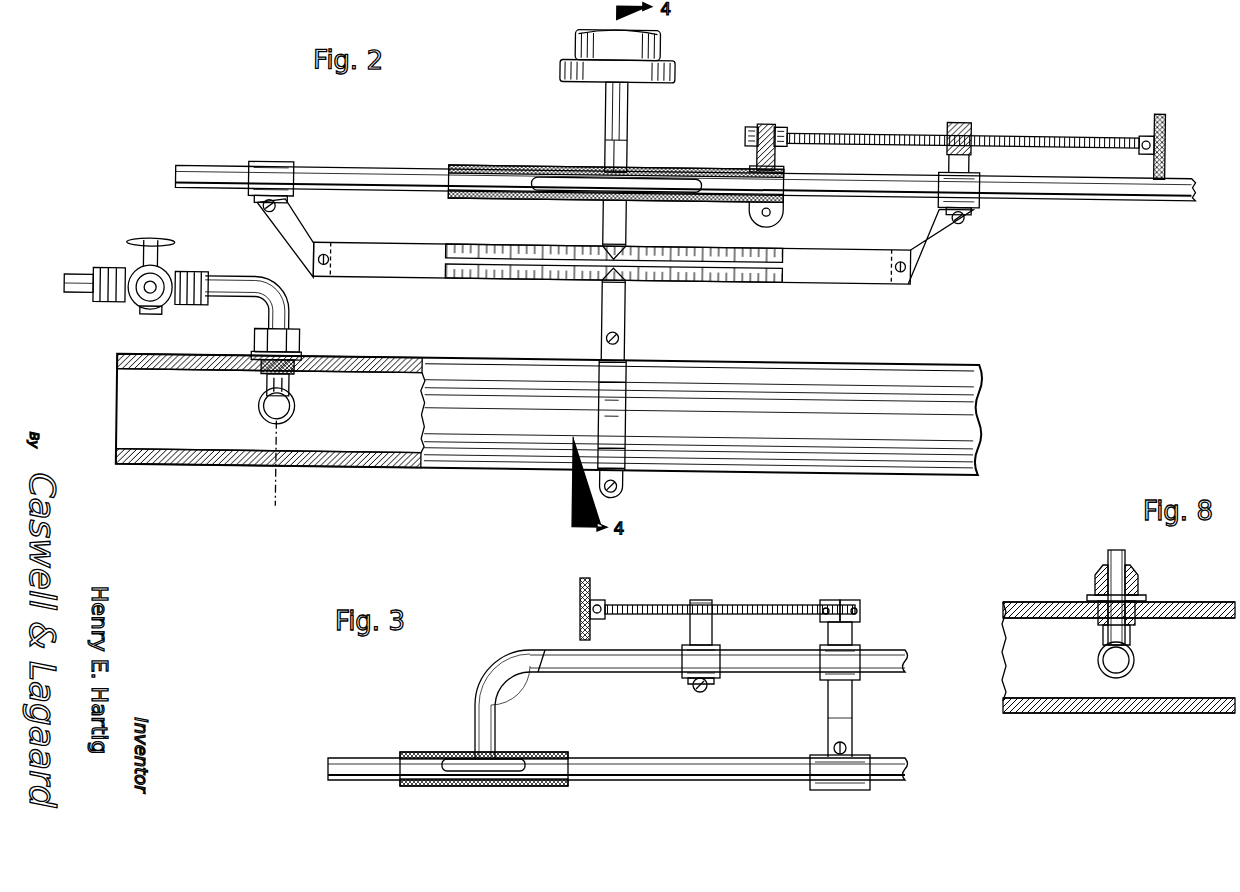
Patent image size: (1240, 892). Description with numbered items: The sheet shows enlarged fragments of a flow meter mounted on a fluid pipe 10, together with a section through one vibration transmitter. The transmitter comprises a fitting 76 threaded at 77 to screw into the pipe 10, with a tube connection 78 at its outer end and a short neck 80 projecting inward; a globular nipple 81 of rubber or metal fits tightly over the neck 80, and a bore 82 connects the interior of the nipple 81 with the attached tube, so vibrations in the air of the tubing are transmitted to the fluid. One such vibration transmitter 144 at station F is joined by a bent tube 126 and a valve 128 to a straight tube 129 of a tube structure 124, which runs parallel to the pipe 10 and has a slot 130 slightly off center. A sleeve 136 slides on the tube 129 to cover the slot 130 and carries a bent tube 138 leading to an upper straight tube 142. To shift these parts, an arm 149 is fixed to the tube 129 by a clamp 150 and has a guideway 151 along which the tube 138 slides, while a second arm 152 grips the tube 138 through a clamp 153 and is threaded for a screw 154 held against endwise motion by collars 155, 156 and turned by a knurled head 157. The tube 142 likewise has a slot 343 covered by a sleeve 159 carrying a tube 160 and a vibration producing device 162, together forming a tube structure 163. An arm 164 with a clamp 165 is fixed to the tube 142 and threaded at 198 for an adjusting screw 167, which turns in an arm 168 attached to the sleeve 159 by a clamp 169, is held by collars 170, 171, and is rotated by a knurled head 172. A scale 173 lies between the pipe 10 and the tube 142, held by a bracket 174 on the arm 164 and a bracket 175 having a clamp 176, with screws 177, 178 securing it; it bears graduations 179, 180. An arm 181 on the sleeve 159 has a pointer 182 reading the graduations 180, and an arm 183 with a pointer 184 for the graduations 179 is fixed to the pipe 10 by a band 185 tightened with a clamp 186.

In FIG. 2, the pipe 10 is at (935, 372).
In FIG. 8, the pipe 10 is at (1083, 713).
In FIG. 2, the fitting 76 is at (302, 360).
In FIG. 8, the fitting 76 is at (1131, 628).
In FIG. 8, the threaded portion 77 is at (1096, 614).
In FIG. 2, the tube connection 78 is at (258, 340).
In FIG. 8, the tube connection 78 is at (1133, 582).
In FIG. 8, the neck 80 is at (1106, 634).
In FIG. 8, the nipple 81 is at (1130, 672).
In FIG. 8, the bore 82 is at (1128, 606).
In FIG. 3, the tube structure 124 is at (388, 758).
In FIG. 2, the bent tube 126 is at (250, 281).
In FIG. 2, the valve 128 is at (136, 306).
In FIG. 2, the straight tube 129 is at (78, 283).
In FIG. 3, the straight tube 129 is at (710, 770).
In FIG. 3, the slot 130 is at (500, 771).
In FIG. 3, the sleeve 136 is at (428, 752).
In FIG. 3, the bent tube 138 is at (555, 672).
In FIG. 2, the straight tube 142 is at (326, 171).
In FIG. 3, the straight tube 142 is at (890, 660).
In FIG. 2, the vibration transmitter 144 is at (268, 420).
In FIG. 3, the arm 149 is at (845, 706).
In FIG. 3, the clamp 150 is at (840, 790).
In FIG. 3, the guideway 151 is at (835, 666).
In FIG. 3, the second arm 152 is at (698, 632).
In FIG. 3, the clamp 153 is at (710, 690).
In FIG. 3, the screw 154 is at (735, 605).
In FIG. 3, the collar 155 is at (826, 600).
In FIG. 3, the collar 156 is at (858, 600).
In FIG. 3, the knurled head 157 is at (580, 600).
In FIG. 2, the sleeve 159 is at (455, 167).
In FIG. 2, the tube 160 is at (603, 110).
In FIG. 2, the vibration producing device 162 is at (660, 55).
In FIG. 2, the tube structure 163 is at (601, 168).
In FIG. 2, the arm 164 is at (962, 164).
In FIG. 2, the clamp 165 is at (965, 214).
In FIG. 2, the adjusting screw 167 is at (1090, 131).
In FIG. 2, the arm 168 is at (775, 152).
In FIG. 2, the clamp 169 is at (783, 210).
In FIG. 2, the collar 170 is at (750, 125).
In FIG. 2, the collar 171 is at (779, 125).
In FIG. 2, the knurled head 172 is at (1163, 136).
In FIG. 2, the scale 173 is at (828, 280).
In FIG. 2, the bracket 174 is at (930, 252).
In FIG. 2, the bracket 175 is at (296, 237).
In FIG. 2, the clamp 176 is at (268, 166).
In FIG. 2, the screw 177 is at (324, 269).
In FIG. 2, the screw 178 is at (900, 269).
In FIG. 2, the graduations 179 is at (481, 280).
In FIG. 2, the graduations 180 is at (486, 246).
In FIG. 2, the arm 181 is at (626, 222).
In FIG. 2, the pointer 182 is at (606, 246).
In FIG. 2, the arm 183 is at (626, 316).
In FIG. 2, the pointer 184 is at (604, 282).
In FIG. 2, the band 185 is at (627, 410).
In FIG. 2, the clamp 186 is at (624, 484).
In FIG. 2, the threaded portion 198 is at (957, 118).
In FIG. 2, the slot 343 is at (660, 180).